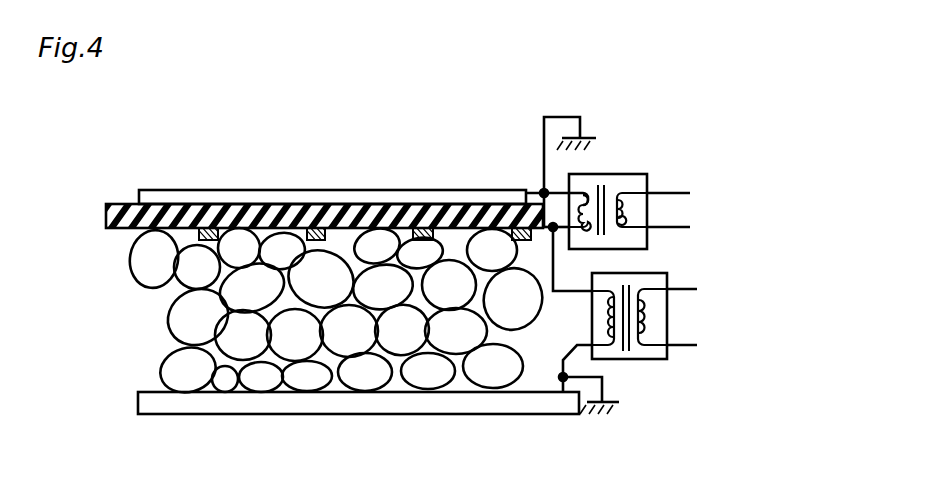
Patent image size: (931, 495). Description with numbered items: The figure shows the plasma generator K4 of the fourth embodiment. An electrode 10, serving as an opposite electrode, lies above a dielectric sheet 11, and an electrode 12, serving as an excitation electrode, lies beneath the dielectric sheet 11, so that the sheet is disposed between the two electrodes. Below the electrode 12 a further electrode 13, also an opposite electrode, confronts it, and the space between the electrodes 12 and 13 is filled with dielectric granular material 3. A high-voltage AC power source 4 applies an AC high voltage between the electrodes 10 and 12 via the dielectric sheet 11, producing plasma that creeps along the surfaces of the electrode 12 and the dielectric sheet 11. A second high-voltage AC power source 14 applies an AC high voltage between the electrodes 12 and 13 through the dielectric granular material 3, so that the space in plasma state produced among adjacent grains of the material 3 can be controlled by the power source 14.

The plasma generator K4 is at (481, 127).
The dielectric granular material 3 is at (178, 320).
The high-voltage AC power source 4 is at (613, 174).
The electrode 10 is at (305, 200).
The dielectric sheet 11 is at (204, 215).
The electrode 12 is at (423, 228).
The electrode 13 is at (300, 408).
The high-voltage AC power source 14 is at (640, 360).